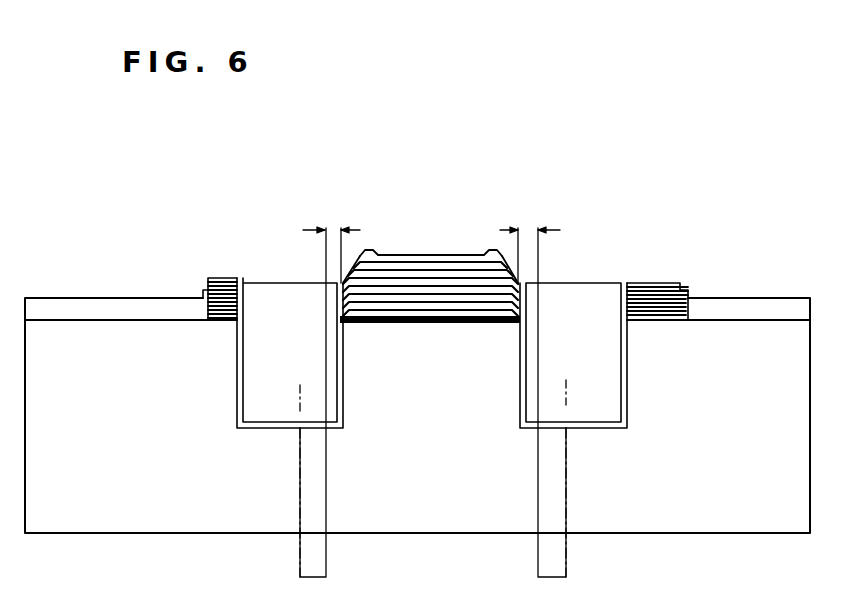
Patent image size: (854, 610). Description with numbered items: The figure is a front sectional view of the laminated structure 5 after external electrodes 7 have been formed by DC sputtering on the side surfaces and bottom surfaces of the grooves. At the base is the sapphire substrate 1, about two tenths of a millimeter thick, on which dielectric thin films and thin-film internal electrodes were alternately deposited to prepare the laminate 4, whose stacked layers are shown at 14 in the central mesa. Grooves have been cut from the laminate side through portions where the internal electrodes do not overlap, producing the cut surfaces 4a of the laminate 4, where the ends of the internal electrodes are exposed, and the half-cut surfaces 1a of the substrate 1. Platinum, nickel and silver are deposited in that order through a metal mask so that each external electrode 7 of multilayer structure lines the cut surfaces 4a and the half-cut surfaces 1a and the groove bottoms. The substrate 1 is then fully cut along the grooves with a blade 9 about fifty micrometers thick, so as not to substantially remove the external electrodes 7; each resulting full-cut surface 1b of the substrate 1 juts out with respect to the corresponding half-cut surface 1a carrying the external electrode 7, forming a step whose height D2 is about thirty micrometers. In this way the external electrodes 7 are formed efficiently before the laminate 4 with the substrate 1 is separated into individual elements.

The sapphire substrate 1 is at (143, 534).
The half-cut surface of the substrate 1a is at (336, 387).
The full-cut surface of the substrate 1b is at (325, 510).
The laminate 4 is at (431, 245).
The stacked layers of mesa 14 is at (438, 249).
The cut surface of the laminate 4a is at (334, 306).
The laminated structure 5 is at (684, 240).
The external electrode 7 is at (337, 387).
The blade 9 is at (328, 565).
The step height D2 is at (431, 239).